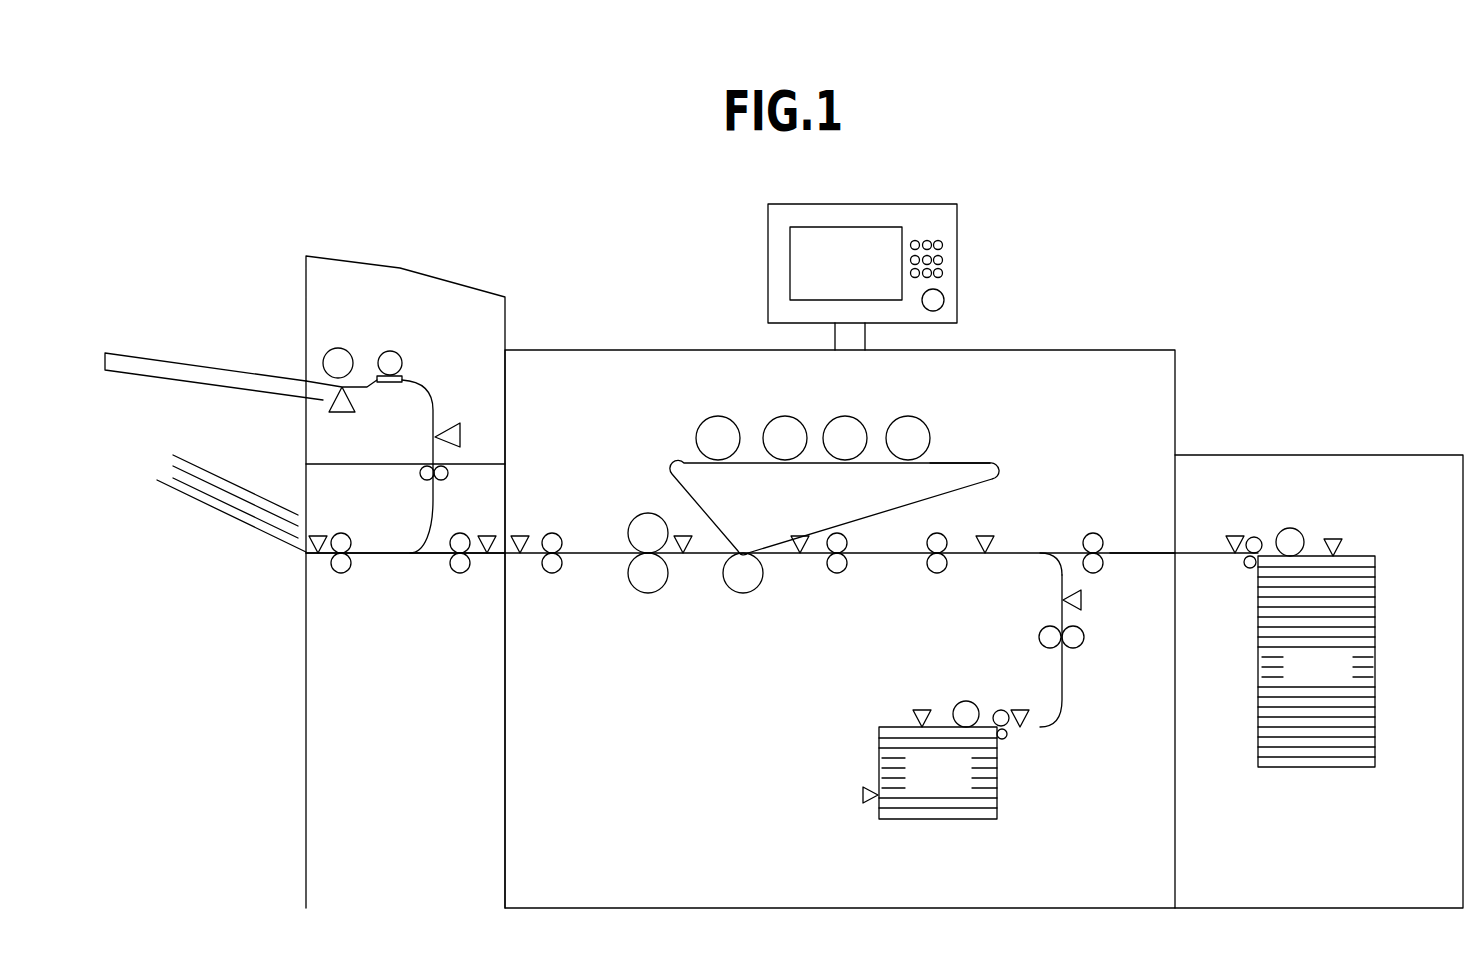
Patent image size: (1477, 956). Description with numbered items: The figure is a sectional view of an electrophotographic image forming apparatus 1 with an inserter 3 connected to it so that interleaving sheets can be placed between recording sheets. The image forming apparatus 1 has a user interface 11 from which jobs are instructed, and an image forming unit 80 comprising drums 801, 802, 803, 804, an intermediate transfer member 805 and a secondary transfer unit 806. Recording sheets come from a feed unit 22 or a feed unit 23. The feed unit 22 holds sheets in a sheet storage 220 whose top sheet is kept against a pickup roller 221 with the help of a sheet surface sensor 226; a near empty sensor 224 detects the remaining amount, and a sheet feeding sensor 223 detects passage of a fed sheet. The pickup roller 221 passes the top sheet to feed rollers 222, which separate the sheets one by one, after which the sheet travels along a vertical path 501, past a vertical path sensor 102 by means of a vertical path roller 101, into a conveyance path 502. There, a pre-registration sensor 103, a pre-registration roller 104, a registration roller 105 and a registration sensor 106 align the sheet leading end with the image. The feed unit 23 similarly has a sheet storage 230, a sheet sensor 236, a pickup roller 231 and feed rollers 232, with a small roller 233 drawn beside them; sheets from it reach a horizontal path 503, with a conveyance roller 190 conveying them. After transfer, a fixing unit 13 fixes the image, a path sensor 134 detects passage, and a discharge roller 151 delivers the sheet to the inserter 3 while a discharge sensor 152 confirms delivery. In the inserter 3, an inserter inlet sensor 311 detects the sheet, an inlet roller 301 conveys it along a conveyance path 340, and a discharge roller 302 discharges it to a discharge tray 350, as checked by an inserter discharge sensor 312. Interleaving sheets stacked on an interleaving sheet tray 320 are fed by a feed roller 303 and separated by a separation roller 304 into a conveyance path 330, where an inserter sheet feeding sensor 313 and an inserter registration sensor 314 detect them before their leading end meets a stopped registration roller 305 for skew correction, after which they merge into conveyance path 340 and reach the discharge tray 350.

The image forming apparatus 1 is at (641, 350).
The inserter 3 is at (346, 258).
The user interface 11 is at (916, 204).
The fixing unit 13 is at (648, 513).
The feed unit 22 is at (879, 735).
The feed unit 23 is at (1378, 557).
The image forming unit 80 is at (834, 507).
The vertical path roller 101 is at (1085, 637).
The vertical path sensor 102 is at (1083, 600).
The pre-registration sensor 103 is at (985, 535).
The pre-registration roller 104 is at (938, 575).
The registration roller 105 is at (836, 575).
The registration sensor 106 is at (800, 556).
The path sensor 134 is at (684, 558).
The discharge roller 151 is at (562, 540).
The discharge sensor 152 is at (520, 535).
The conveyance roller 190 is at (1093, 532).
The sheet storage 220 is at (938, 773).
The pickup roller 221 is at (966, 701).
The feed rollers 222 is at (1003, 710).
The sheet feeding sensor 223 is at (1032, 730).
The near empty sensor 224 is at (863, 797).
The sheet surface sensor 226 is at (922, 710).
The sheet storage 230 is at (1316, 662).
The pickup roller 231 is at (1290, 529).
The feed rollers 232 is at (1250, 538).
The driven roller 233 is at (1247, 565).
The sheet sensor 236 is at (1335, 538).
The inlet roller 301 is at (460, 574).
The discharge roller 302 is at (341, 574).
The feed roller 303 is at (338, 348).
The separation roller 304 is at (392, 351).
The registration roller 305 is at (427, 481).
The inserter inlet sensor 311 is at (487, 535).
The inserter discharge sensor 312 is at (320, 535).
The inserter sheet feeding sensor 313 is at (330, 412).
The inserter registration sensor 314 is at (462, 436).
The interleaving sheet tray 320 is at (222, 366).
The conveyance path 330 is at (437, 412).
The conveyance path 340 is at (378, 556).
The discharge tray 350 is at (203, 454).
The vertical path 501 is at (1064, 692).
The conveyance path 502 is at (1015, 553).
The horizontal path 503 is at (1130, 553).
The drum 801 is at (718, 416).
The drum 802 is at (785, 416).
The drum 803 is at (845, 416).
The drum 804 is at (908, 416).
The intermediate transfer member 805 is at (972, 467).
The secondary transfer unit 806 is at (743, 593).